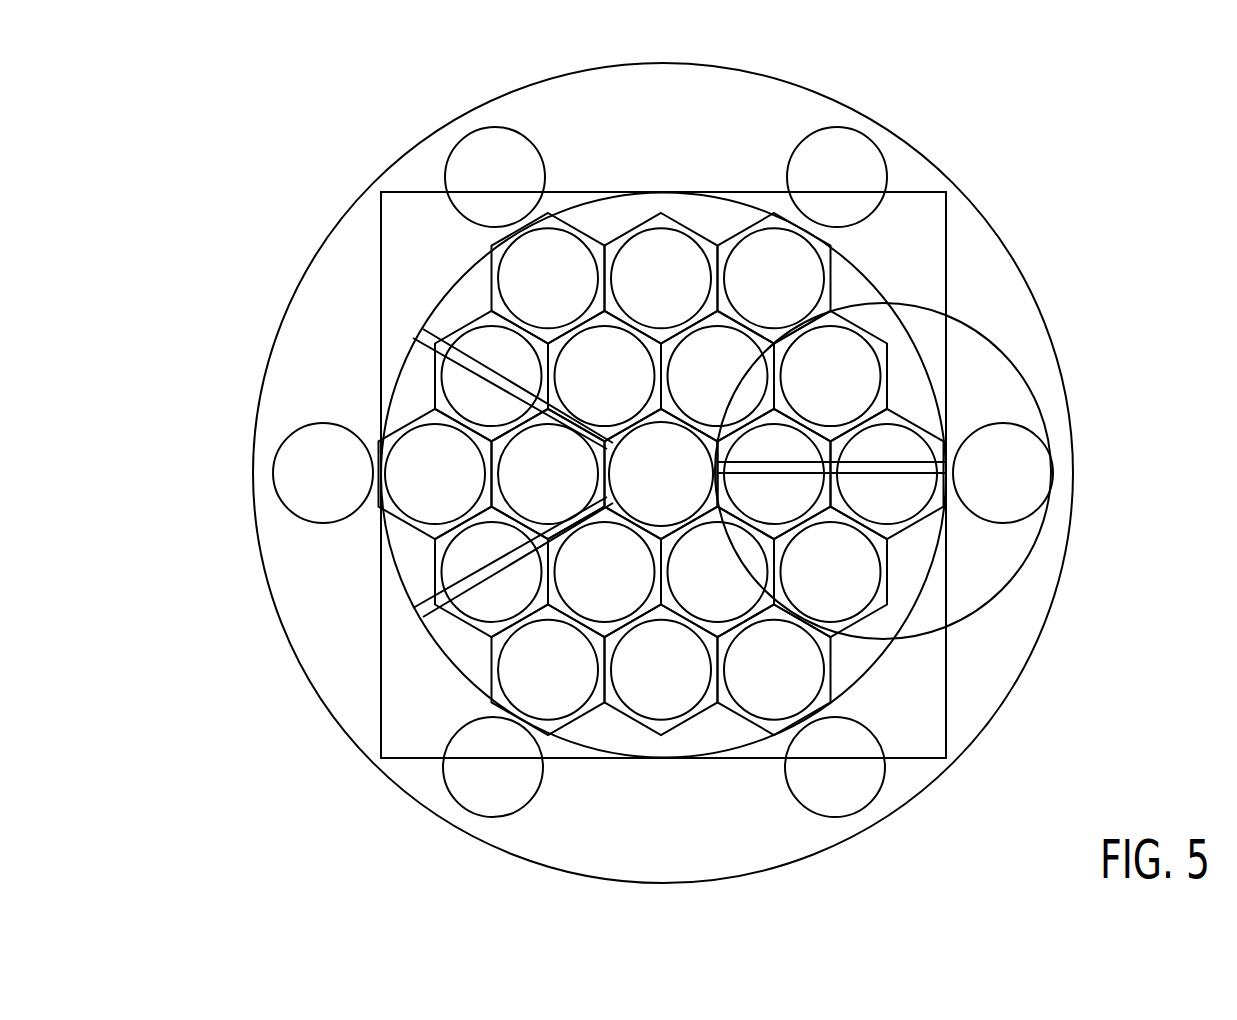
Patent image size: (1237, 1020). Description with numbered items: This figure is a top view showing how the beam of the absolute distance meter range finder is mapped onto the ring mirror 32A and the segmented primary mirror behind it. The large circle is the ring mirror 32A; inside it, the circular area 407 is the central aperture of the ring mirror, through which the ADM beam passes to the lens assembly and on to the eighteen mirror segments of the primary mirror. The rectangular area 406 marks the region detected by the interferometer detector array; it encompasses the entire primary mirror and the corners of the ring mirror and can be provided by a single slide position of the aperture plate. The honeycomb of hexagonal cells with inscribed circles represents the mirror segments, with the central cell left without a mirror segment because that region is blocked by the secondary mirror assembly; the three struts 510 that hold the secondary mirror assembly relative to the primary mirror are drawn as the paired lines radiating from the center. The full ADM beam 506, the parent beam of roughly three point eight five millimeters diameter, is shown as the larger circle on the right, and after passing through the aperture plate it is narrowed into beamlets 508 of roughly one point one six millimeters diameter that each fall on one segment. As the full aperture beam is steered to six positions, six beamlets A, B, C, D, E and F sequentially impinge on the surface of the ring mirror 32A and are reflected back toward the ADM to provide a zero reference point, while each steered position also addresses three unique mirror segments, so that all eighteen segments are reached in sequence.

The ring mirror 32A is at (616, 108).
The rectangular area 406 is at (413, 190).
The circular area 407 is at (397, 575).
The full ADM beam 506 is at (980, 327).
The beamlets 508 is at (913, 447).
The struts 510 is at (422, 338).
The beamlet A is at (1035, 485).
The beamlet B is at (860, 152).
The beamlet C is at (467, 157).
The beamlet D is at (297, 455).
The beamlet E is at (468, 787).
The beamlet F is at (862, 790).